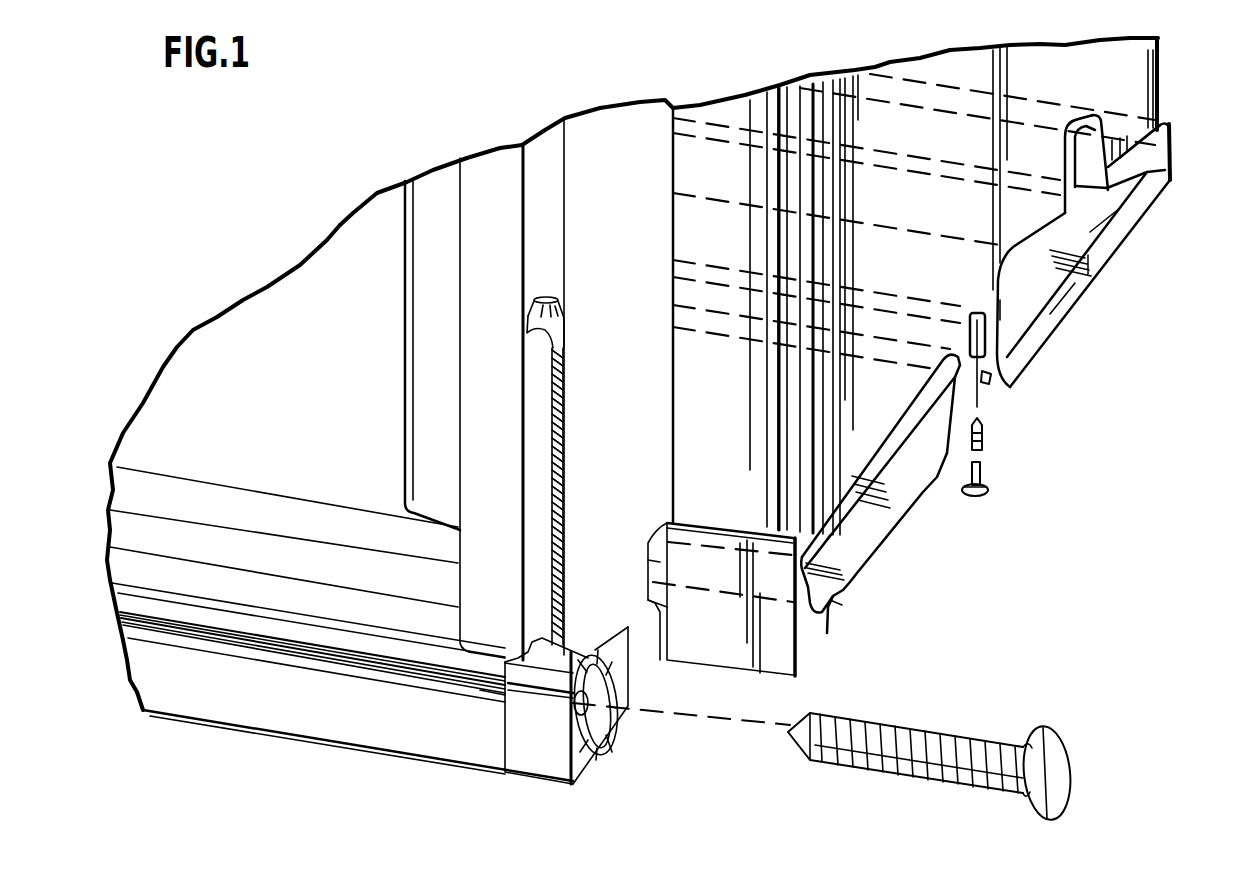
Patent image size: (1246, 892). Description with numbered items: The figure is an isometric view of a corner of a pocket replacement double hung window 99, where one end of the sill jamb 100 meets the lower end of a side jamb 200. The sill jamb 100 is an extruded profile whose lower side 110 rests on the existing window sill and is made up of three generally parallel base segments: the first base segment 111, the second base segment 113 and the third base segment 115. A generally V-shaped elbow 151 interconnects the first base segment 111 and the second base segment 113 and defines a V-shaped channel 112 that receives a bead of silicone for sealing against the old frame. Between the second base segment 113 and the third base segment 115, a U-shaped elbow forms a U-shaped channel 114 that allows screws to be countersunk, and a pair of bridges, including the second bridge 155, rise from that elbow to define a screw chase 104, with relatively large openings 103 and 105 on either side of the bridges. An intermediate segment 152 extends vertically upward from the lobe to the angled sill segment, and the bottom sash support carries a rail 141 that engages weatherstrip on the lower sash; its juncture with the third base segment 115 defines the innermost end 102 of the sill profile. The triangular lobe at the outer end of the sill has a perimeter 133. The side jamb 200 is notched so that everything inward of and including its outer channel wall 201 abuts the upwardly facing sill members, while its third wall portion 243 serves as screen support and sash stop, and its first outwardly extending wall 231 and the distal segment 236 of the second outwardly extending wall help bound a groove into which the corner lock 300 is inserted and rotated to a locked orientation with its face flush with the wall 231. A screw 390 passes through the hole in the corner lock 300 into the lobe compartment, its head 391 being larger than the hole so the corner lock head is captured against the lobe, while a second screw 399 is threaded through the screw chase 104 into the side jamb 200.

The double hung window 99 is at (350, 825).
The sill jamb 100 is at (228, 732).
The side jamb 200 is at (1165, 89).
The outer channel wall 201 is at (697, 490).
The third wall portion 243 is at (413, 431).
The distal segment 236 is at (504, 655).
The perimeter 133 is at (495, 687).
The corner lock 300 is at (534, 782).
The first base segment 111 is at (635, 690).
The first outwardly extending wall 231 is at (640, 643).
The lower side 110 is at (1174, 196).
The rail 141 is at (1088, 118).
The innermost end 102 is at (1168, 150).
The relatively large opening 105 is at (1095, 225).
The third base segment 115 is at (1067, 302).
The second bridge 155 is at (995, 322).
The screw chase 104 is at (970, 312).
The U-shaped channel 114 is at (990, 398).
The screw 399 is at (985, 445).
The relatively large opening 103 is at (897, 487).
The V-shaped elbow 151 is at (828, 567).
The second base segment 113 is at (887, 550).
The V-shaped channel 112 is at (842, 605).
The intermediate segment 152 is at (805, 630).
The screw 390 is at (995, 730).
The screw head 391 is at (1057, 793).